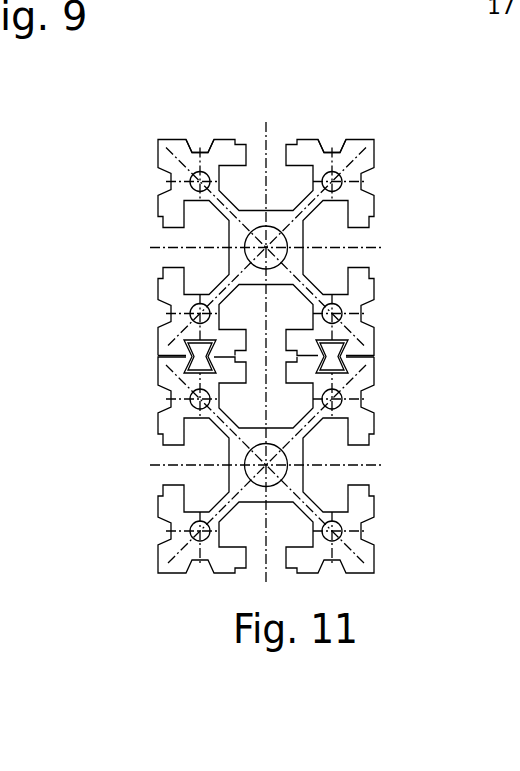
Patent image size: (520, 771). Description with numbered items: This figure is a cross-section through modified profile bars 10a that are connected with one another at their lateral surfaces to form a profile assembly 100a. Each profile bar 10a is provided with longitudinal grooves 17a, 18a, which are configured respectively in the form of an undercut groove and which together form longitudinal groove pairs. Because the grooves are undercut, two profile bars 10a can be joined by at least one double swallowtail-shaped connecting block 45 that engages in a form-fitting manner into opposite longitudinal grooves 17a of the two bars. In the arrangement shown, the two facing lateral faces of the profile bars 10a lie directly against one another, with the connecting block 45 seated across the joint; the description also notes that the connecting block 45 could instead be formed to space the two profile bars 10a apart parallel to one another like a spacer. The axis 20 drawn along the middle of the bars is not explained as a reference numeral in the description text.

The profile assembly 100a is at (118, 324).
The profile element 10a is at (393, 183).
The connecting element 45 is at (186, 368).
The first groove 17a is at (198, 137).
The second groove 18a is at (334, 137).
The longitudinal axis 20 is at (270, 68).